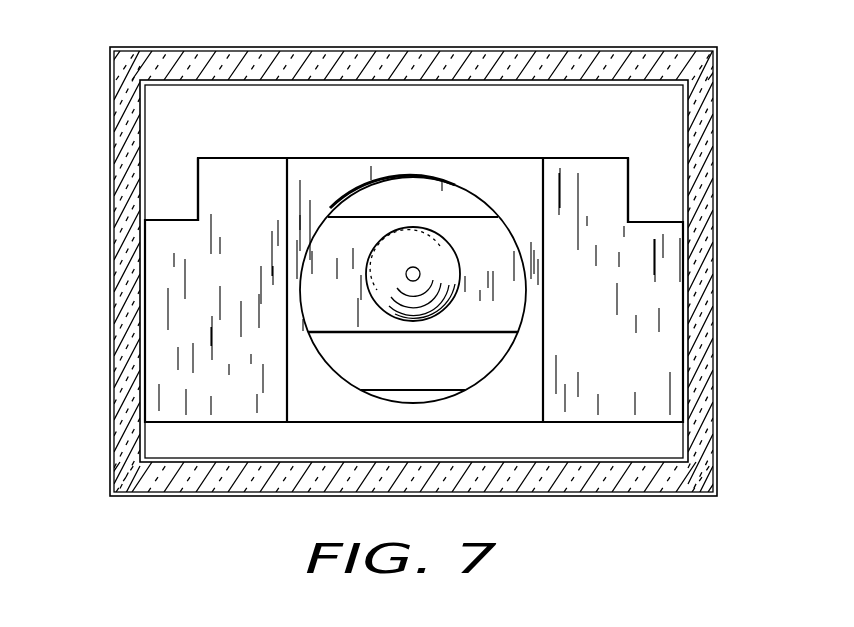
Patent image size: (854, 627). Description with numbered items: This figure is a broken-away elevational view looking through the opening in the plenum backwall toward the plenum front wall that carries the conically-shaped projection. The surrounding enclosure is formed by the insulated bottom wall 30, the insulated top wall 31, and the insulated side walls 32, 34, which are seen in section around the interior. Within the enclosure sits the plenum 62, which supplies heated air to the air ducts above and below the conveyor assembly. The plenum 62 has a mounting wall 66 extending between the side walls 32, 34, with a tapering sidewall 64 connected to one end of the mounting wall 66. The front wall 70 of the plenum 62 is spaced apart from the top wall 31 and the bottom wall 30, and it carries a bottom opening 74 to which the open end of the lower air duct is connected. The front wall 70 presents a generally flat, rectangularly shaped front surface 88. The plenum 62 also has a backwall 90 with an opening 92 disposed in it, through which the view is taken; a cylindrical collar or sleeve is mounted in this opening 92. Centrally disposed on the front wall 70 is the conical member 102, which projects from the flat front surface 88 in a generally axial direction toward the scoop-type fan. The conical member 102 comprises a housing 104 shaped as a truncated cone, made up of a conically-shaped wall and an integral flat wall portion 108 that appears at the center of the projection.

The insulated bottom wall 30 is at (680, 498).
The insulated top wall 31 is at (205, 47).
The insulated side wall 32 is at (110, 216).
The insulated side wall 34 is at (717, 197).
The plenum 62 is at (413, 197).
The tapering sidewall 64 is at (178, 240).
The mounting wall 66 is at (640, 246).
The front wall 70 is at (412, 400).
The bottom opening 74 is at (368, 392).
The flat front surface 88 is at (362, 321).
The backwall 90 is at (320, 176).
The opening 92 is at (385, 182).
The conical member 102 is at (438, 226).
The housing 104 is at (380, 277).
The flat wall portion 108 is at (420, 274).